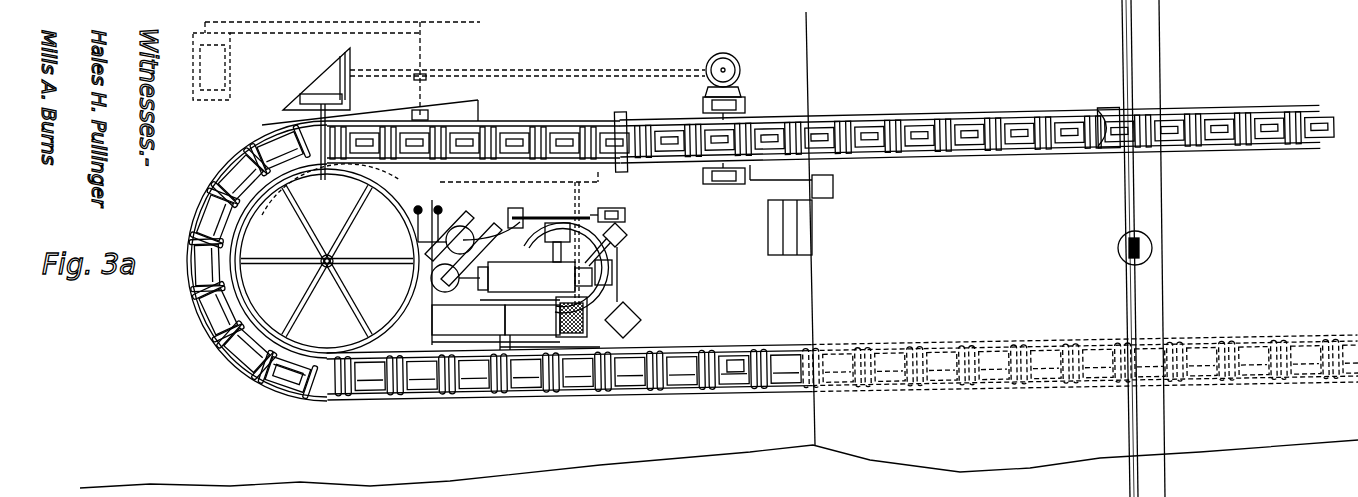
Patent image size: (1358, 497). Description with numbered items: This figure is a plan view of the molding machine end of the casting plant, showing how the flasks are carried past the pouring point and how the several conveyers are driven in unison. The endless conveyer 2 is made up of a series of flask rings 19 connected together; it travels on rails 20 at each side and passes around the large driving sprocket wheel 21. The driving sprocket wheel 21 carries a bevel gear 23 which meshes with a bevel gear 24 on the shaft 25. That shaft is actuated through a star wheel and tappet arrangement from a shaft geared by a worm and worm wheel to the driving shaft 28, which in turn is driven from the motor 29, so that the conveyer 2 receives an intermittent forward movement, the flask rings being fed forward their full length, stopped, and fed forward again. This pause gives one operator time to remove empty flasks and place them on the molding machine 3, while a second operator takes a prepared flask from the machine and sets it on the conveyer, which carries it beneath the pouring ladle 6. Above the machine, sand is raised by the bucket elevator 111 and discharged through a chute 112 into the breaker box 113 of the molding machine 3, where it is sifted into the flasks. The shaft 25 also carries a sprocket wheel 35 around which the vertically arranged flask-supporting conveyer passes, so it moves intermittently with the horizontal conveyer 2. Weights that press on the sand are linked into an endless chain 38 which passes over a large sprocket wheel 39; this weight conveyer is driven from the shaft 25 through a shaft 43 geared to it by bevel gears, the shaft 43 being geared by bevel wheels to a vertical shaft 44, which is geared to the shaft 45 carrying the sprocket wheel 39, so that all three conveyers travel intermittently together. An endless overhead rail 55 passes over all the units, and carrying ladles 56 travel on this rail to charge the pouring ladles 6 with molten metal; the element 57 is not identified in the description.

The endless conveyer 2 is at (726, 357).
The molding machine 3 is at (527, 258).
The pouring ladle 6 is at (1148, 118).
The flask ring 19 is at (300, 385).
The rail 20 is at (405, 400).
The driving sprocket wheel 21 is at (340, 350).
The bevel gear 23 is at (392, 300).
The bevel gear 24 is at (300, 192).
The shaft 25 is at (325, 95).
The driving shaft 28 is at (422, 50).
The motor 29 is at (336, 61).
The sprocket wheel 35 is at (350, 135).
The endless chain 38 is at (905, 120).
The sprocket wheel 39 is at (708, 130).
The shaft 43 is at (520, 68).
The vertical shaft 44 is at (742, 70).
The shaft 45 is at (725, 184).
The endless overhead rail 55 is at (1138, 208).
The carrying ladle 56 is at (1150, 250).
The cable 57 is at (1162, 280).
The bucket elevator 111 is at (496, 321).
The chute 112 is at (550, 327).
The breaker box 113 is at (584, 317).